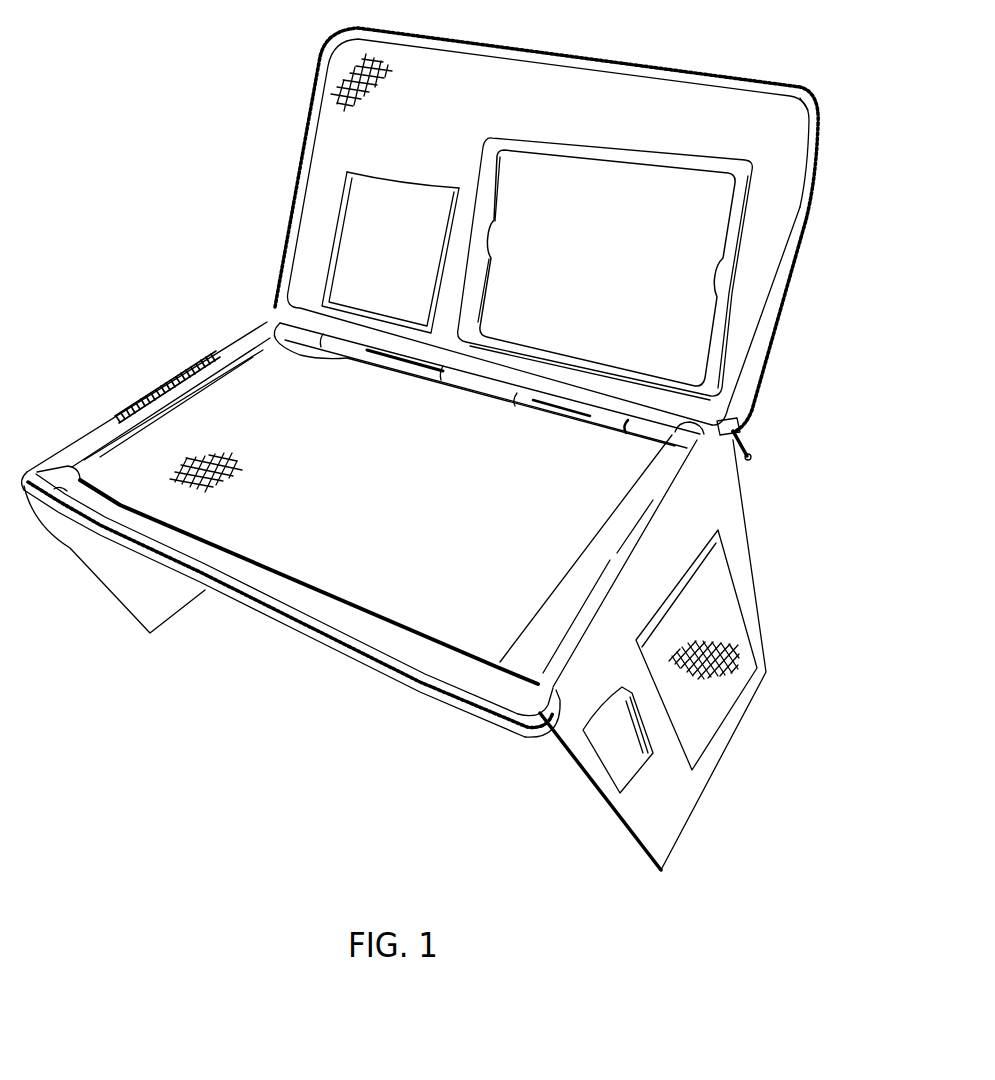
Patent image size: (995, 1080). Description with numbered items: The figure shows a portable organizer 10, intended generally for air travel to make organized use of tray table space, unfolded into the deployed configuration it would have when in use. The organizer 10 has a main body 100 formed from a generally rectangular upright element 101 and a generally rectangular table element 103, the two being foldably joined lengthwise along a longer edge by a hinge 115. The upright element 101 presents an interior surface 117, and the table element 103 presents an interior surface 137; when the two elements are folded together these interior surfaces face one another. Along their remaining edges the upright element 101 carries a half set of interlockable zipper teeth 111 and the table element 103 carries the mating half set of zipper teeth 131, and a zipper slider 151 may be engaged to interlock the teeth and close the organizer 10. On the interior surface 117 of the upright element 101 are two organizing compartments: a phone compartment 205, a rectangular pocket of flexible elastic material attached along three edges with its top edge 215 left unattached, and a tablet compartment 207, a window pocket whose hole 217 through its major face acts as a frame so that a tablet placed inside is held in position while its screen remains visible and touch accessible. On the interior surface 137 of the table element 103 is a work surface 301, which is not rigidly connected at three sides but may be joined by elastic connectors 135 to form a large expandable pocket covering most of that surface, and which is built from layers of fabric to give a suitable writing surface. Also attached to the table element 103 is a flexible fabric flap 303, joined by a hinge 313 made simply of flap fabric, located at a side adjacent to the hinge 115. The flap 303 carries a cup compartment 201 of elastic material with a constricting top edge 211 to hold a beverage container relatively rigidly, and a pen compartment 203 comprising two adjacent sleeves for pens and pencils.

The organizer 10 is at (167, 46).
The main body 100 is at (754, 373).
The upright element 101 is at (296, 235).
The table element 103 is at (483, 723).
The zipper teeth 111 is at (774, 82).
The hinge 115 is at (665, 430).
The interior surface 117 is at (337, 126).
The zipper teeth 131 is at (421, 690).
The elastic connectors 135 is at (273, 326).
The interior surface 137 is at (385, 603).
The zipper slider 151 is at (755, 437).
The cup compartment 201 is at (727, 722).
The pen compartment 203 is at (653, 769).
The phone compartment 205 is at (400, 267).
The tablet compartment 207 is at (594, 158).
The top edge 211 is at (686, 581).
The top edge 215 is at (410, 187).
The hole 217 is at (563, 283).
The work surface 301 is at (292, 573).
The flap 303 is at (756, 594).
The hinge 313 is at (541, 715).